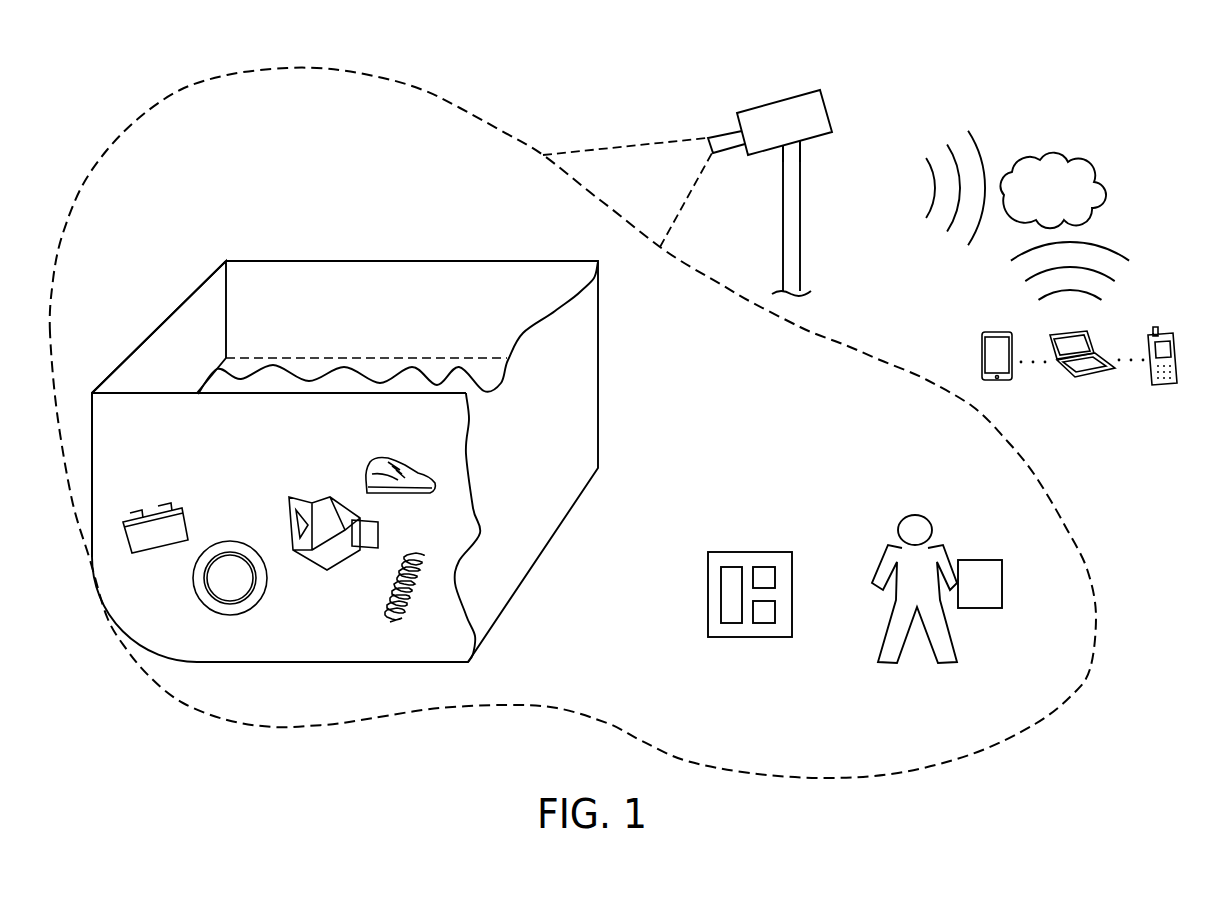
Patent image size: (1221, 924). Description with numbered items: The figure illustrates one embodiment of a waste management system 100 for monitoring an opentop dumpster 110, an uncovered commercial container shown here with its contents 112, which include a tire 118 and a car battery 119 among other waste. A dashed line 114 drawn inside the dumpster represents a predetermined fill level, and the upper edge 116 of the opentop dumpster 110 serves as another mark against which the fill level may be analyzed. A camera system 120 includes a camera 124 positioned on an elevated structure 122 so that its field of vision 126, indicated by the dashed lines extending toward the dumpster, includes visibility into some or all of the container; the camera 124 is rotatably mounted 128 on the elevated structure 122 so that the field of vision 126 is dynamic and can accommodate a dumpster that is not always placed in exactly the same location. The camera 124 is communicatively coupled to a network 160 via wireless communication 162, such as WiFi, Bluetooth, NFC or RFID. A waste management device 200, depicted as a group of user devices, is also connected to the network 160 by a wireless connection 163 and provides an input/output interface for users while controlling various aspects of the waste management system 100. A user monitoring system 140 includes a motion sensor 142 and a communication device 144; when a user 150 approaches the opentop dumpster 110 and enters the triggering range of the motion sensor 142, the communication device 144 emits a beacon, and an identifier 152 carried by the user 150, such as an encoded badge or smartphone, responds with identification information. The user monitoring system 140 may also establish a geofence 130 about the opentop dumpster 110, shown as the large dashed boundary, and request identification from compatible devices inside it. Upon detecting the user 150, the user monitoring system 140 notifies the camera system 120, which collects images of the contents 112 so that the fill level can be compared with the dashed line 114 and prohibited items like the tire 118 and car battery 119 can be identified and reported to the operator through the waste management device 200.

The waste management system 100 is at (1058, 66).
The opentop dumpster 110 is at (393, 261).
The contents 112 is at (258, 435).
The dashed line 114 is at (366, 358).
The upper edge 116 is at (150, 335).
The tire 118 is at (266, 597).
The car battery 119 is at (182, 508).
The camera system 120 is at (867, 146).
The elevated structure 122 is at (802, 213).
The camera 124 is at (832, 110).
The field of vision 126 is at (626, 141).
The rotatable mount 128 is at (777, 162).
The geofence 130 is at (428, 91).
The user monitoring system 140 is at (773, 570).
The motion sensor 142 is at (776, 588).
The communication device 144 is at (776, 622).
The user 150 is at (964, 506).
The identifier 152 is at (1002, 583).
The network 160 is at (1060, 154).
The wireless communication 162 is at (937, 257).
The wireless connection 163 is at (1128, 281).
The waste management device 200 is at (1058, 407).